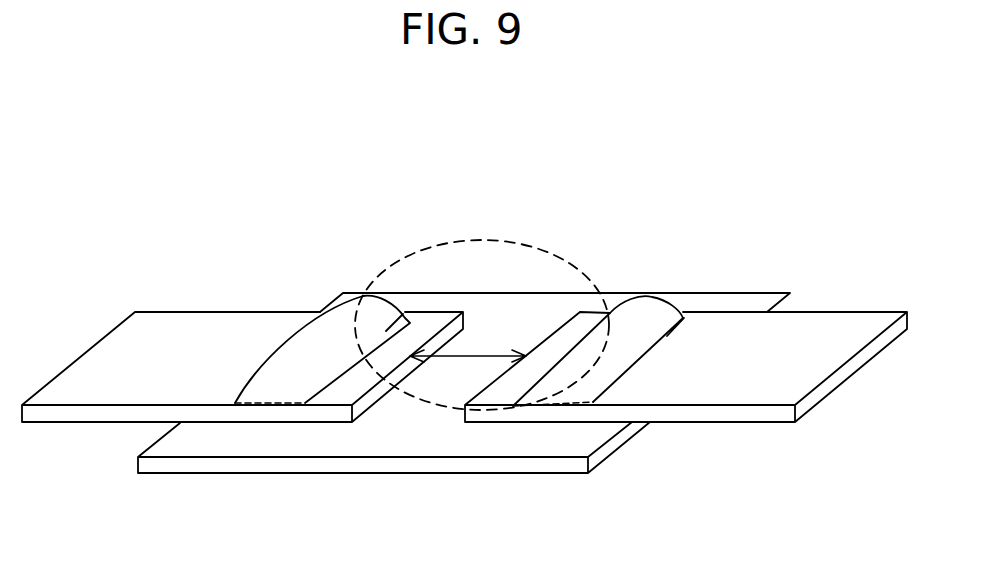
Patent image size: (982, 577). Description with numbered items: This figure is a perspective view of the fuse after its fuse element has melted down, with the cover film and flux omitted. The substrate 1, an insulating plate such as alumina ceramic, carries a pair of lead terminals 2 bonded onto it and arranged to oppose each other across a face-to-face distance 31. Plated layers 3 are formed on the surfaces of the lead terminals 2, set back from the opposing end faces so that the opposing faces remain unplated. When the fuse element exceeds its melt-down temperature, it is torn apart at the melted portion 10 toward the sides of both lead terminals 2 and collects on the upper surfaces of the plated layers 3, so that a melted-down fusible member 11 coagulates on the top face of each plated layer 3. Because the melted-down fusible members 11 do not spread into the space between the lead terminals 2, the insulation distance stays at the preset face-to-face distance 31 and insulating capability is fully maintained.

The substrate 1 is at (405, 443).
The lead terminals 2 is at (213, 357).
The plated layers 3 is at (235, 403).
The melted portion 10 is at (492, 240).
The melted-down fusible member 11 is at (282, 380).
The face-to-face distance 31 is at (474, 350).